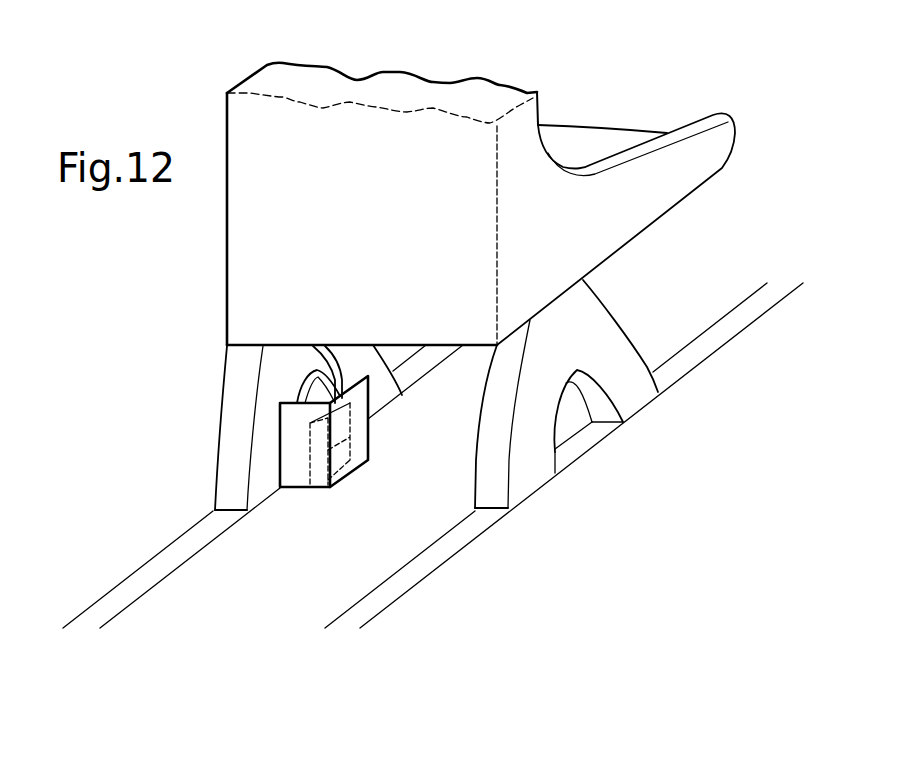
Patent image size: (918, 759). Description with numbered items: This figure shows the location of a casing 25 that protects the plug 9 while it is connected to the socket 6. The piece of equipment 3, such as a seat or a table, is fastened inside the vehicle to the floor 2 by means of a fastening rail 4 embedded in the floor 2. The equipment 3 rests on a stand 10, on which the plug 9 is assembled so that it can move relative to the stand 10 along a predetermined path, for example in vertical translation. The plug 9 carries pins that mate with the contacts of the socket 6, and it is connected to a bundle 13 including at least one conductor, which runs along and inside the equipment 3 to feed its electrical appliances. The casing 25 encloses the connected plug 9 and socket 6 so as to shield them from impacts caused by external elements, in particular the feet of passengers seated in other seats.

The floor 2 is at (652, 298).
The piece of equipment 3 is at (637, 178).
The fastening rail 4 is at (758, 305).
The socket 6 is at (322, 470).
The plug 9 is at (317, 439).
The stand 10 is at (227, 462).
The bundle 13 is at (334, 347).
The casing 25 is at (295, 418).